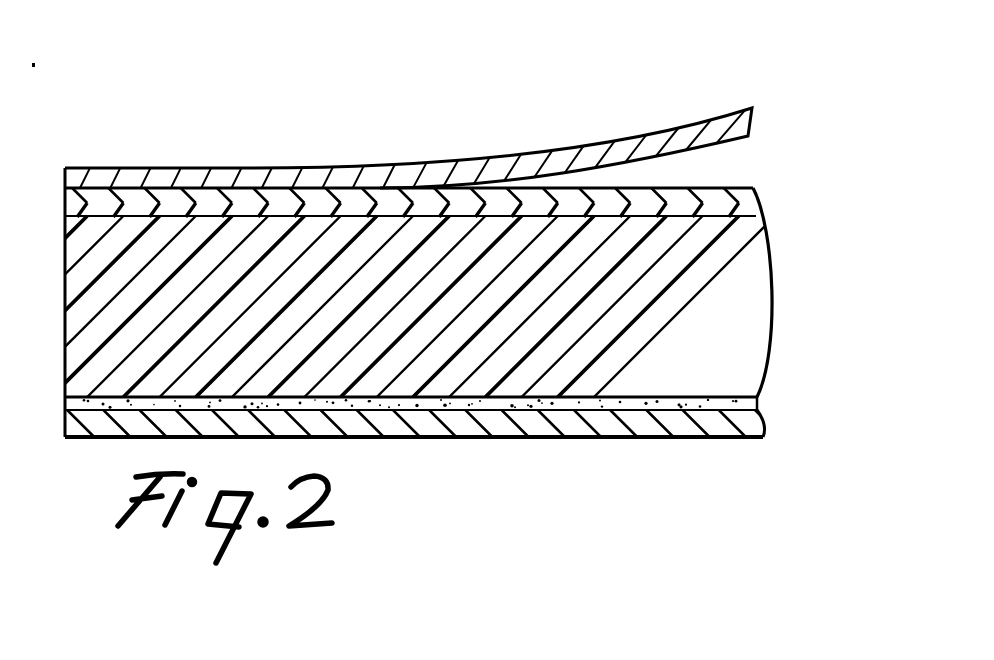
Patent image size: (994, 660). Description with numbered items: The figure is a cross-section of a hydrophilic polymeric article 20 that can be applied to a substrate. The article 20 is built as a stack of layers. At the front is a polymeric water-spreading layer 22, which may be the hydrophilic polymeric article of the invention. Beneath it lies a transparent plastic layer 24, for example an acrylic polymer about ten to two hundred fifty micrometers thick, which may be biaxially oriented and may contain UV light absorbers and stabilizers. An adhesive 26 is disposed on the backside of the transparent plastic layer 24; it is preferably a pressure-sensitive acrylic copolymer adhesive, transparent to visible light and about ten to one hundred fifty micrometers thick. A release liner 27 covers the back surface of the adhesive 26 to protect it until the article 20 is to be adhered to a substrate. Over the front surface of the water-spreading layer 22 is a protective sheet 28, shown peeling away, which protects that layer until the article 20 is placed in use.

The hydrophilic polymeric article 20 is at (578, 80).
The polymeric water-spreading layer 22 is at (743, 198).
The transparent plastic layer 24 is at (713, 292).
The adhesive 26 is at (748, 405).
The release liner 27 is at (715, 425).
The protective sheet 28 is at (745, 123).